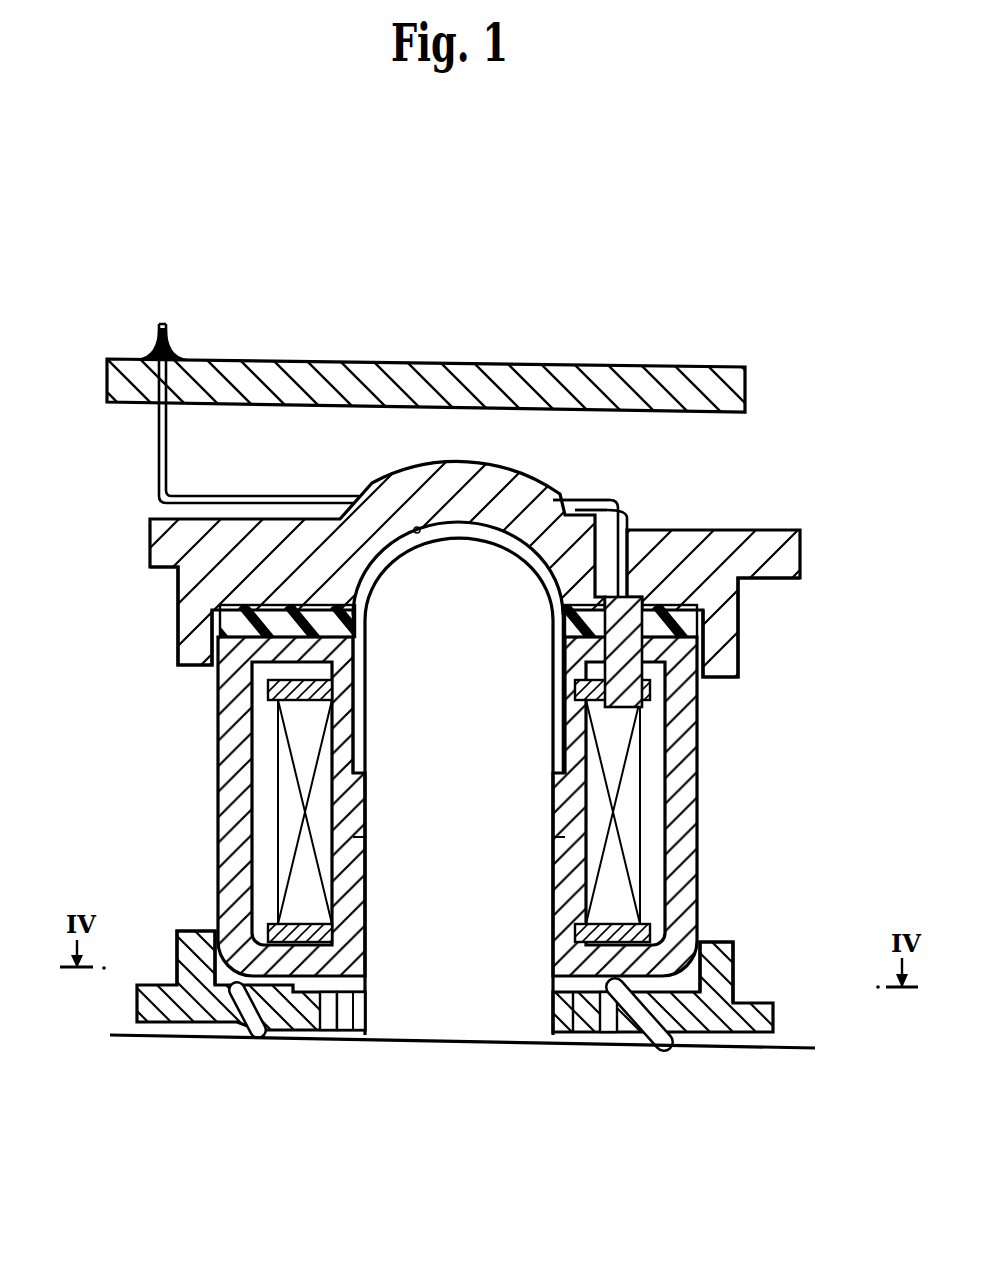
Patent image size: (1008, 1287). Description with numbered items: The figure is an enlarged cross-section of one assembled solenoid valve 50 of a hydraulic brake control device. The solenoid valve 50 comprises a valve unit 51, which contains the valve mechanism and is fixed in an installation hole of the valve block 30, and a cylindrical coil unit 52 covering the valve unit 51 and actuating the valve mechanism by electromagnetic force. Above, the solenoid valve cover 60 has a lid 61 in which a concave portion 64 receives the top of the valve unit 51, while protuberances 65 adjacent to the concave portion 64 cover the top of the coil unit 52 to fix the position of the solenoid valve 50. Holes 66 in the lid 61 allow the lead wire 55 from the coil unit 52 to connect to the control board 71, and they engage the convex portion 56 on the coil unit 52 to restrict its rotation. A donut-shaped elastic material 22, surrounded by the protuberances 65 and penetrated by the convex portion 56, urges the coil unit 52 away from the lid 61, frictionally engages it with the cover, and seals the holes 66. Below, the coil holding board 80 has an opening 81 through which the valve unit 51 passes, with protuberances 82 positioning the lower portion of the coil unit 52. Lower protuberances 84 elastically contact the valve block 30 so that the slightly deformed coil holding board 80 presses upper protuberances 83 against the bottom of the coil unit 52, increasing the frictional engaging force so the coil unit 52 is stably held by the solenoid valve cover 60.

The control board 71 is at (495, 360).
The lid 61 is at (238, 518).
The solenoid valve cover 60 is at (803, 523).
The protuberances 65 is at (188, 634).
The concave portion 64 is at (417, 527).
The lead wire 55 is at (620, 498).
The holes 66 is at (597, 500).
The elastic material 22 is at (740, 612).
The solenoid valve 50 is at (416, 806).
The coil unit 52 is at (698, 800).
The convex portion 56 is at (650, 596).
The valve unit 51 is at (458, 1037).
The coil holding board 80 is at (484, 1004).
The protuberances 82 is at (177, 955).
The upper protuberances 83 is at (314, 1033).
The lower protuberances 84 is at (247, 1040).
The opening 81 is at (559, 1033).
The valve block 30 is at (800, 1050).